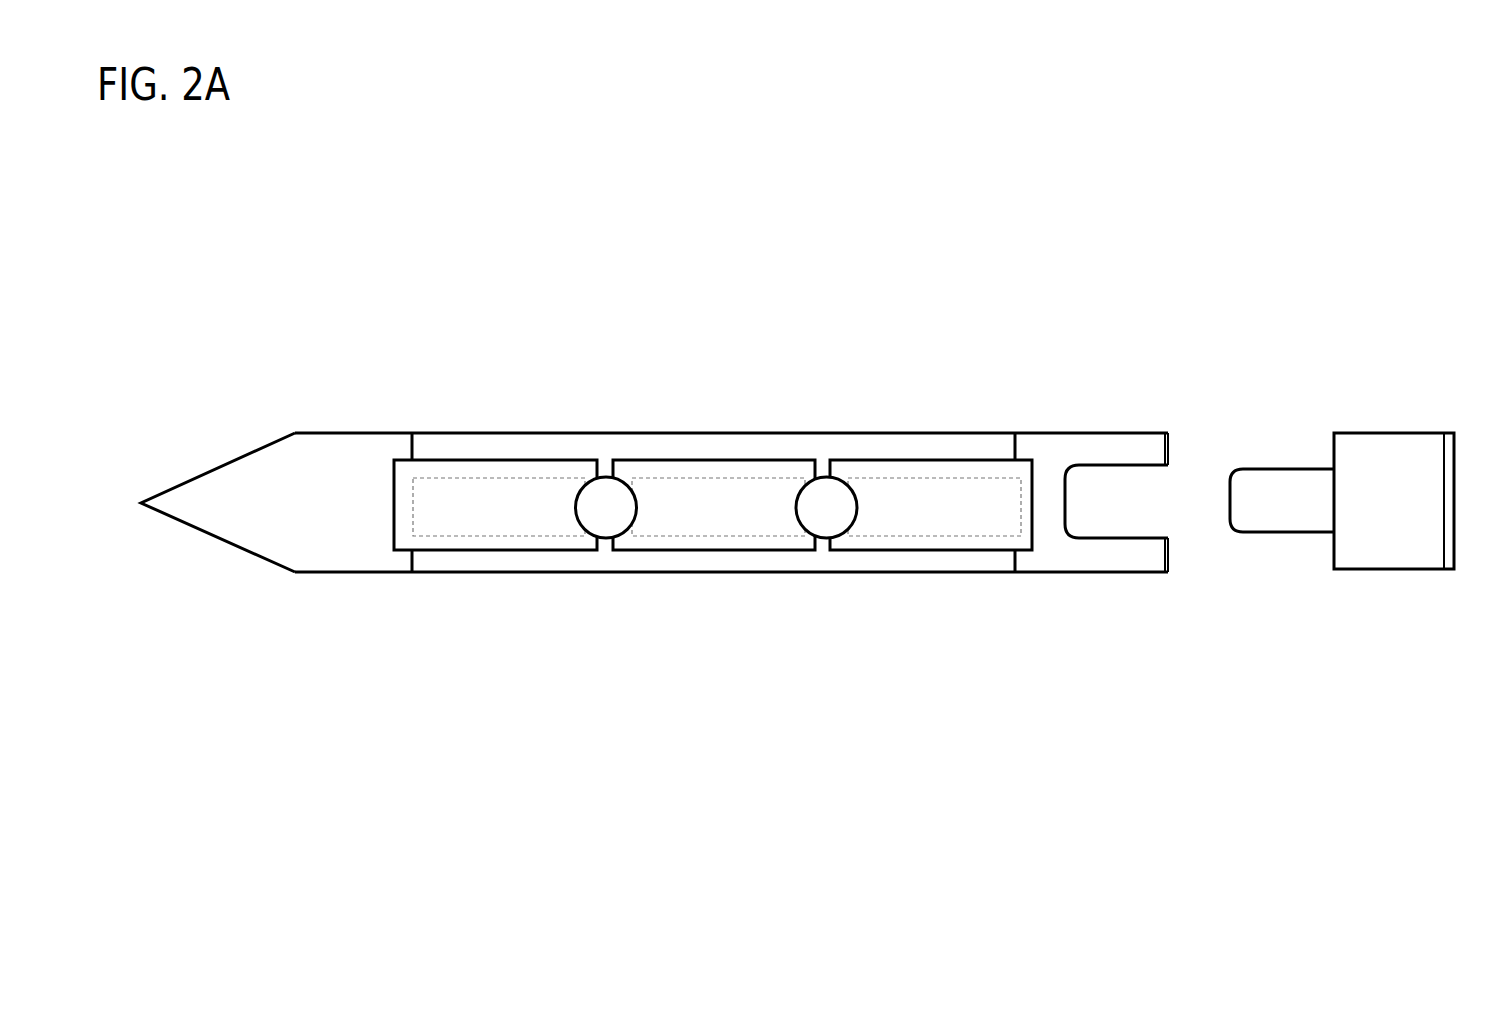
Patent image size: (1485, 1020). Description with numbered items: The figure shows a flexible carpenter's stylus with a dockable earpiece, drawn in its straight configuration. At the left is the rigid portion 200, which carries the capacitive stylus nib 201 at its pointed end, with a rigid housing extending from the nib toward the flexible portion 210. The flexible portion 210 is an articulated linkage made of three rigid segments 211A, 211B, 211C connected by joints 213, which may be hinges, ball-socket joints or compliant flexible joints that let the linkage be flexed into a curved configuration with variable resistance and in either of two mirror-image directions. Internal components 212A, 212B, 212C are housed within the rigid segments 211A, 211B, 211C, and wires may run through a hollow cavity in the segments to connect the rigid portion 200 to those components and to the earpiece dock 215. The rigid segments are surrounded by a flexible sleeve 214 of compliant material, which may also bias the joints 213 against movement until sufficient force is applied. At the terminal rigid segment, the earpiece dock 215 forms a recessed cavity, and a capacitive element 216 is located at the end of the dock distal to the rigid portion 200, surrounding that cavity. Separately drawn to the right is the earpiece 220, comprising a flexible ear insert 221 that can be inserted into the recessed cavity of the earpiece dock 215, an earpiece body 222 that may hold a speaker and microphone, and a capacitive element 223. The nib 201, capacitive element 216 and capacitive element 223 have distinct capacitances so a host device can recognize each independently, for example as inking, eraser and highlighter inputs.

The rigid portion 200 is at (128, 365).
The capacitive stylus nib 201 is at (141, 503).
The flexible portion 210 is at (408, 363).
The rigid segment 211A is at (458, 473).
The rigid segment 211B is at (716, 473).
The rigid segment 211C is at (946, 473).
The internal component 212A is at (530, 516).
The internal component 212B is at (750, 514).
The internal component 212C is at (967, 514).
The joints 213 is at (626, 520).
The flexible sleeve 214 is at (742, 577).
The earpiece dock 215 is at (1112, 572).
The capacitive element 216 is at (1168, 448).
The earpiece 220 is at (1206, 363).
The flexible ear insert 221 is at (1292, 532).
The earpiece body 222 is at (1382, 570).
The capacitive element 223 is at (1449, 570).